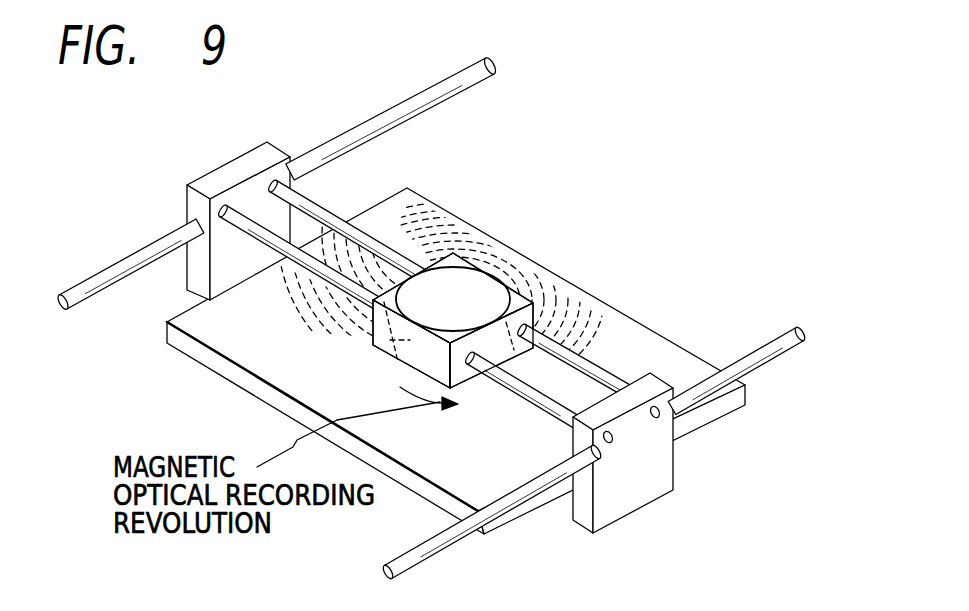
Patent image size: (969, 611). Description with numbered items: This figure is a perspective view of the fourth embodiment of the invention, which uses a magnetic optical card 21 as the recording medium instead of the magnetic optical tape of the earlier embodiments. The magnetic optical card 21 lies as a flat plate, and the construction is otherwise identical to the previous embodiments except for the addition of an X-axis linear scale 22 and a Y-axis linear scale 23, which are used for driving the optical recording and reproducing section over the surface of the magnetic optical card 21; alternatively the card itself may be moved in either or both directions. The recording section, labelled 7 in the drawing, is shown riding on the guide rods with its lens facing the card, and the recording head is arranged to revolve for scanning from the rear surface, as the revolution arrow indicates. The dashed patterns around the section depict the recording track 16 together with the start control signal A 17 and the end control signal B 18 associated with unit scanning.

The magnetic head 7 is at (382, 356).
The recording track 16 is at (557, 268).
The start control signal A 17 is at (340, 247).
The end control signal B 18 is at (350, 247).
The magnetic optical card 21 is at (643, 343).
The X-axis linear scale 22 is at (550, 407).
The Y-axis linear scale 23 is at (783, 352).